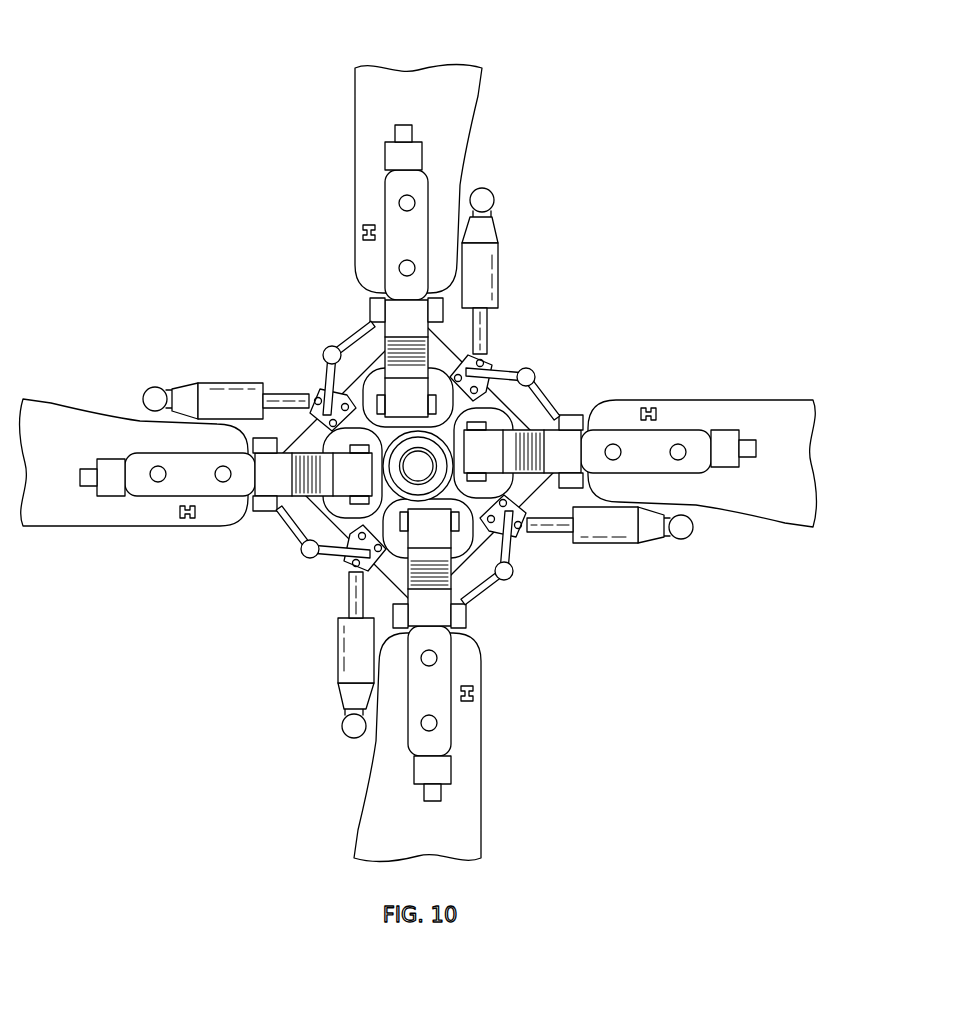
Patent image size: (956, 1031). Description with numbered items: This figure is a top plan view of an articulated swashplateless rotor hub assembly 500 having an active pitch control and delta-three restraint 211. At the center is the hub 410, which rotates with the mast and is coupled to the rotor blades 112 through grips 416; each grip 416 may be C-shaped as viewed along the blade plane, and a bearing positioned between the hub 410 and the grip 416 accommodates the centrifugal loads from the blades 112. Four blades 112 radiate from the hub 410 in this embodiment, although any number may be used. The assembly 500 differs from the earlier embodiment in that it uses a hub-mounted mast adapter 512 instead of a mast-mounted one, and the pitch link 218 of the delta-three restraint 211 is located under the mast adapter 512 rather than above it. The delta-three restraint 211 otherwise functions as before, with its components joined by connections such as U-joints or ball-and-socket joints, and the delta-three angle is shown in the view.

The articulated swashplateless rotor hub assembly 500 is at (202, 60).
The blades 112 is at (355, 124).
The grip 416 is at (383, 197).
The active pitch control and delta-3 restraint 211 is at (294, 297).
The pitch link 218 is at (358, 340).
The hub-mounted mast adapter 512 is at (325, 380).
The hub 410 is at (513, 410).